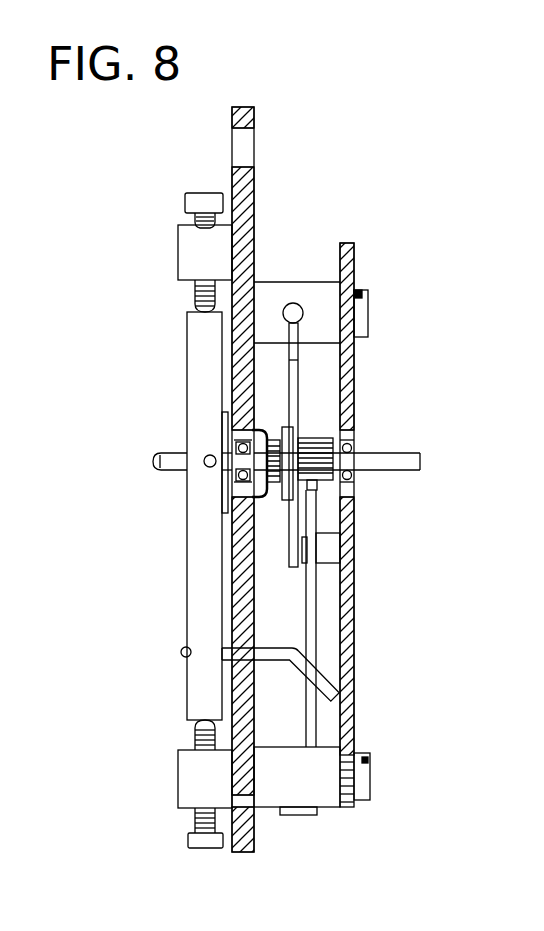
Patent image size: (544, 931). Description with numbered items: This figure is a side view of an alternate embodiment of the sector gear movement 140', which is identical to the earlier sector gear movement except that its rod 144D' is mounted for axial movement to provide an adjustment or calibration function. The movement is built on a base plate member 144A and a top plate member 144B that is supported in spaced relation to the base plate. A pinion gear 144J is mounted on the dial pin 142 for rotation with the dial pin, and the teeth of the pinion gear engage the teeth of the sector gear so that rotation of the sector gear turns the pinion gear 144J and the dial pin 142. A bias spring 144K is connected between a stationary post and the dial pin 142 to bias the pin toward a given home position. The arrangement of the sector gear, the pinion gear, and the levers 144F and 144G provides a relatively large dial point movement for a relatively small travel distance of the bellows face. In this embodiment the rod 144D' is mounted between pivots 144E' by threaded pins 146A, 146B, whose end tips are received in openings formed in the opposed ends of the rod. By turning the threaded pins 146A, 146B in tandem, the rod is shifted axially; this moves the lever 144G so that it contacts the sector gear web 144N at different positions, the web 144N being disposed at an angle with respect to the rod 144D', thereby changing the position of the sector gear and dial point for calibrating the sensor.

The sector gear movement 140' is at (467, 239).
The dial pin 142 is at (395, 453).
The base plate member 144A is at (255, 190).
The top plate member 144B is at (346, 243).
The rod 144D' is at (159, 516).
The pivots 144E' is at (158, 516).
The lever 144F is at (176, 452).
The lever 144G is at (326, 682).
The pinion gear 144J is at (318, 437).
The bias spring 144K is at (300, 392).
The sector gear web 144N is at (311, 640).
The threaded pin 146A is at (190, 194).
The threaded pin 146B is at (188, 841).